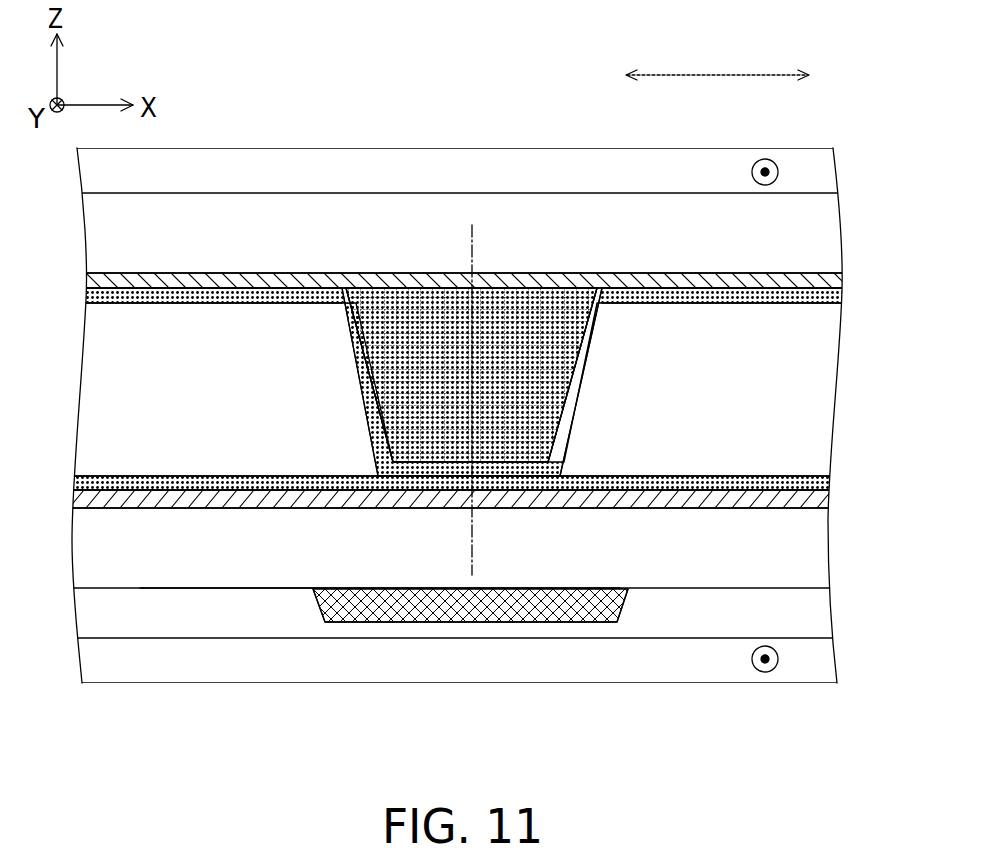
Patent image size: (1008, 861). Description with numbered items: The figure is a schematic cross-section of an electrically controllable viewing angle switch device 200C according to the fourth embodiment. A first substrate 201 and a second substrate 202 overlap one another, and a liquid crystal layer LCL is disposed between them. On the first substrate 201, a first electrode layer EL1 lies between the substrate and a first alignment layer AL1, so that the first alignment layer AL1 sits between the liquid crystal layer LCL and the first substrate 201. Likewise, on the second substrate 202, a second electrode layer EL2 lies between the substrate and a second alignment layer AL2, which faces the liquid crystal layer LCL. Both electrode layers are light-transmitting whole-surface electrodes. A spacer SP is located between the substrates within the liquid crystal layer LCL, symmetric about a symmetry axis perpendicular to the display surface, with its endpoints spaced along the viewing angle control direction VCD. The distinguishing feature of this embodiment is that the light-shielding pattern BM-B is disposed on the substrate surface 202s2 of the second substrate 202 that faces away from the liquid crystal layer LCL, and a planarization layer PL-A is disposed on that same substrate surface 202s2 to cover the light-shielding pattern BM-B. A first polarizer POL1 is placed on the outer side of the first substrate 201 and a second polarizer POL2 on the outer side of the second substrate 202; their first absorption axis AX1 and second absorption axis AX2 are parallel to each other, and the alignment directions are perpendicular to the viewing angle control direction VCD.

The electrically controllable viewing angle switch device 200C is at (875, 757).
The first polarizer POL1 is at (825, 172).
The first substrate 201 is at (826, 232).
The first electrode layer EL1 is at (826, 280).
The first alignment layer AL1 is at (840, 296).
The spacer SP is at (417, 325).
The liquid crystal layer LCL is at (828, 405).
The second alignment layer AL2 is at (828, 480).
The second electrode layer EL2 is at (826, 498).
The second substrate 202 is at (820, 552).
The substrate surface 202s2 is at (136, 592).
The light-shielding pattern BM-B is at (540, 603).
The planarization layer PL-A is at (818, 610).
The second polarizer POL2 is at (822, 650).
The first absorption axis AX1 is at (781, 170).
The second absorption axis AX2 is at (751, 660).
The viewing angle control direction VCD is at (717, 63).